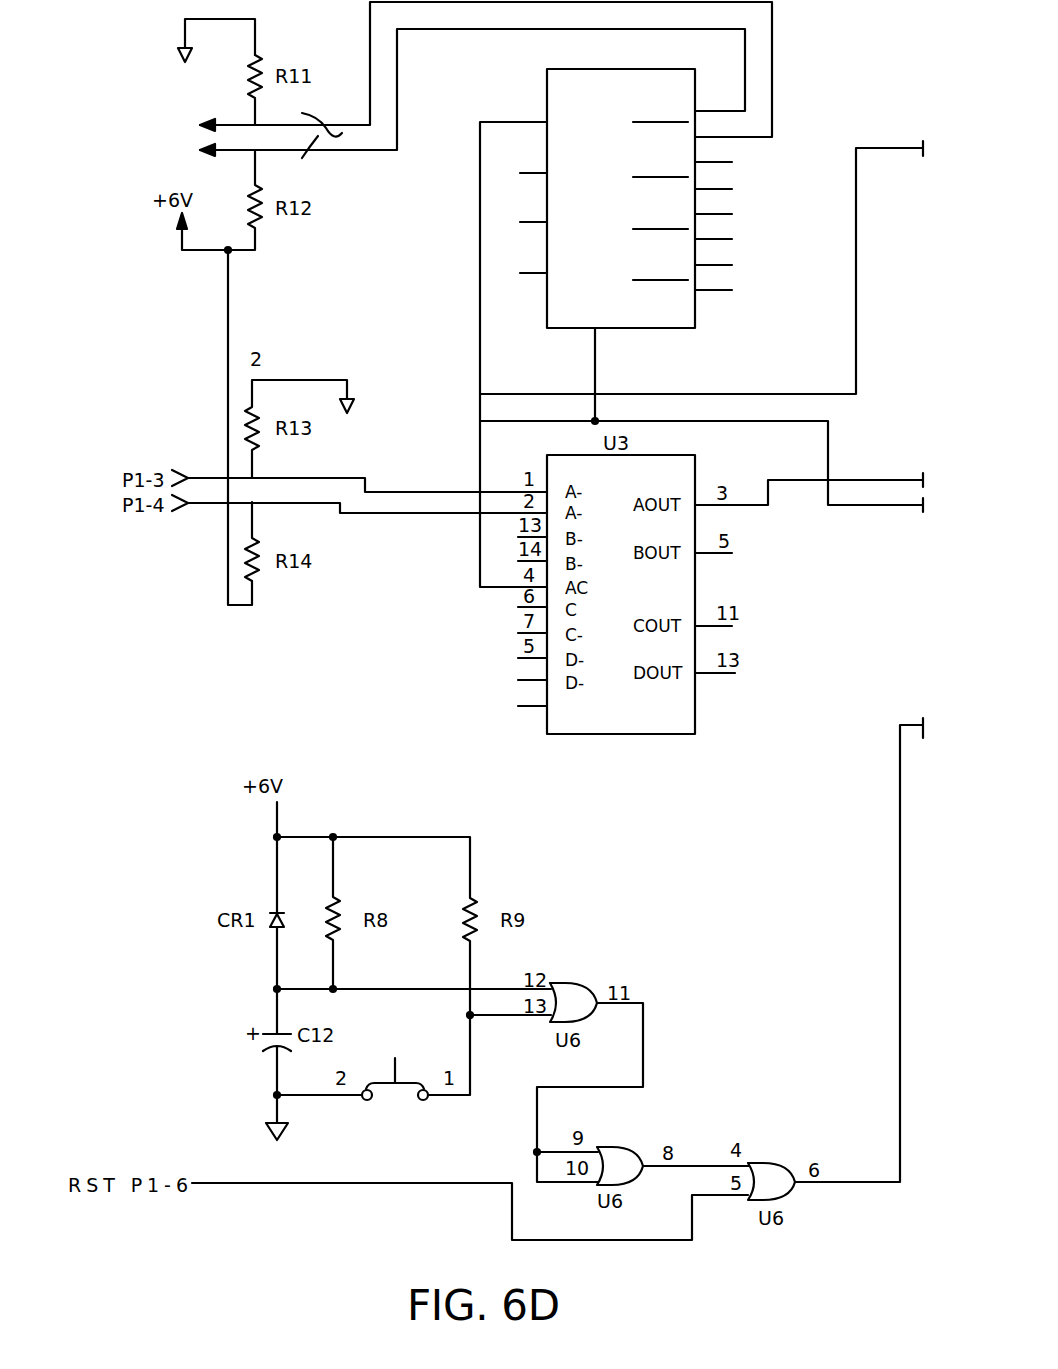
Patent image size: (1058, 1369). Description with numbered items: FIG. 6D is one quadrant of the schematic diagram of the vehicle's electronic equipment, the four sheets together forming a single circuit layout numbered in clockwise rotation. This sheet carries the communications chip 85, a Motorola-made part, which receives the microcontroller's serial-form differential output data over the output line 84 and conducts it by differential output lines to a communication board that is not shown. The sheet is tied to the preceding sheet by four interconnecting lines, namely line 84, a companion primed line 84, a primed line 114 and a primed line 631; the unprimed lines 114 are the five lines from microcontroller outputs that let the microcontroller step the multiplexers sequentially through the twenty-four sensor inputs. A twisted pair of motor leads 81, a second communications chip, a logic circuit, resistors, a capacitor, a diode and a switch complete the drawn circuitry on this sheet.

The twisted pair motor leads 81 is at (338, 130).
The communication chip 85 is at (695, 310).
The output line 84 is at (895, 148).
The lines 114 is at (853, 480).
The line 631 is at (900, 882).